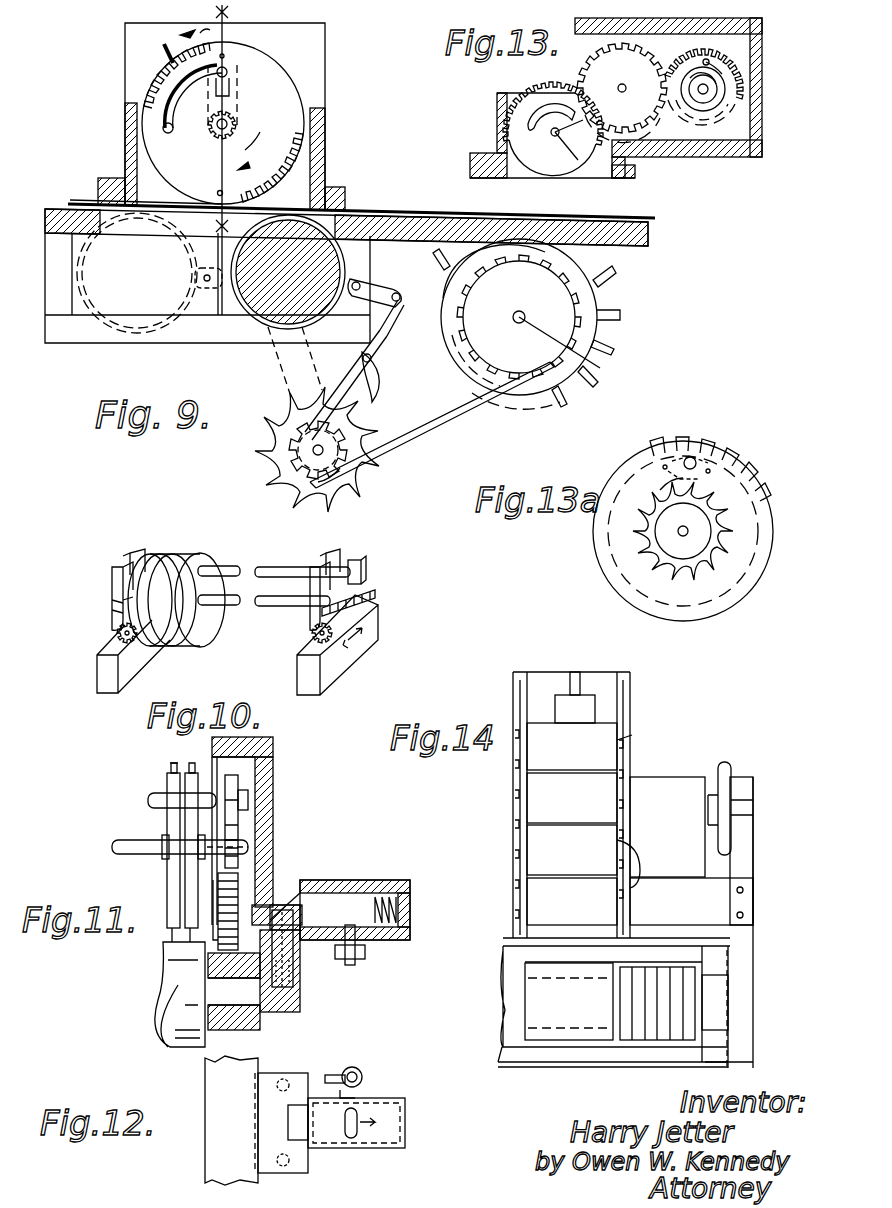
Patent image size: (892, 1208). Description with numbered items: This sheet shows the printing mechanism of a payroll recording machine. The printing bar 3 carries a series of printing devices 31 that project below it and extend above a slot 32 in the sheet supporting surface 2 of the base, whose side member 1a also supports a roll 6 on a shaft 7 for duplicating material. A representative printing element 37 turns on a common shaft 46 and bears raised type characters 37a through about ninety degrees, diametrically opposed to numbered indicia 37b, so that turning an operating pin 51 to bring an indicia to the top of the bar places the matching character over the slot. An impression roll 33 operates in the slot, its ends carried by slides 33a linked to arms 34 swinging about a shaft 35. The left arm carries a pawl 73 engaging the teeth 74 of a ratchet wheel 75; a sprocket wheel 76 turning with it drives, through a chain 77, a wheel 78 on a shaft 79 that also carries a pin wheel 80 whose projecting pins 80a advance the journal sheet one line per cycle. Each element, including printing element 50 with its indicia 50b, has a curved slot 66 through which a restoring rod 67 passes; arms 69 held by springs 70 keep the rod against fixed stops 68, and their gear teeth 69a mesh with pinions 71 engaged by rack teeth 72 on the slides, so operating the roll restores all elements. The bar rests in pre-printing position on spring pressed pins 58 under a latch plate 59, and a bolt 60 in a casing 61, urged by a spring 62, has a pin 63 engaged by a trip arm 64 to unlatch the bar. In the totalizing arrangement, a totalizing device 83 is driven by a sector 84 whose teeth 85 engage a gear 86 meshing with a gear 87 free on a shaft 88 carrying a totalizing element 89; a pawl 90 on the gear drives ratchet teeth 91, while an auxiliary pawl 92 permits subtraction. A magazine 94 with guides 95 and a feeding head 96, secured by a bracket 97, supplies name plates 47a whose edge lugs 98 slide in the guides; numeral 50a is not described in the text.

In FIG. 14, the side member 1a is at (742, 955).
In FIG. 9, the sheet supporting surface 2 is at (72, 207).
In FIG. 9, the printing bar 3 is at (105, 192).
In FIG. 14, the roll 6 is at (715, 770).
In FIG. 14, the shaft 7 is at (745, 790).
In FIG. 9, the printing device 31 is at (208, 178).
In FIG. 9, the slot 32 is at (190, 228).
In FIG. 9, the impression roll 33 is at (280, 310).
In FIG. 11, the impression roll 33 is at (185, 975).
In FIG. 9, the slide 33a is at (220, 322).
In FIG. 10, the slide 33a is at (100, 668).
In FIG. 11, the slide 33a is at (255, 1020).
In FIG. 9, the arm 34 is at (372, 340).
In FIG. 9, the shaft 35 is at (324, 450).
In FIG. 9, the printing element 37 is at (260, 80).
In FIG. 9, the type characters 37a is at (302, 152).
In FIG. 9, the indicia 37b is at (145, 98).
In FIG. 9, the shaft 46 is at (230, 125).
In FIG. 10, the shaft 46 is at (268, 608).
In FIG. 14, the name plates 47a is at (572, 824).
In FIG. 11, the printing element 50 is at (170, 785).
In FIG. 11, the rod lower end 50a is at (168, 935).
In FIG. 11, the indicia 50b is at (172, 765).
In FIG. 9, the pin 51 is at (163, 48).
In FIG. 11, the spring pressed pins 58 is at (292, 960).
In FIG. 12, the spring pressed pins 58 is at (283, 1080).
In FIG. 11, the latch plate 59 is at (272, 906).
In FIG. 12, the latch plate 59 is at (290, 1160).
In FIG. 11, the bolt 60 is at (332, 890).
In FIG. 12, the bolt 60 is at (300, 1135).
In FIG. 11, the casing 61 is at (372, 882).
In FIG. 12, the casing 61 is at (376, 1148).
In FIG. 11, the spring 62 is at (394, 928).
In FIG. 11, the pin 63 is at (360, 965).
In FIG. 12, the pin 63 is at (355, 1120).
In FIG. 12, the trip arm 64 is at (338, 1060).
In FIG. 9, the curved slot 66 is at (163, 128).
In FIG. 10, the curved slot 66 is at (192, 585).
In FIG. 9, the restoring rod 67 is at (226, 70).
In FIG. 10, the restoring rod 67 is at (228, 568).
In FIG. 11, the restoring rod 67 is at (150, 803).
In FIG. 10, the fixed stops 68 is at (366, 572).
In FIG. 11, the fixed stops 68 is at (246, 795).
In FIG. 9, the arm 69 is at (236, 98).
In FIG. 10, the arm 69 is at (112, 582).
In FIG. 11, the arm 69 is at (240, 822).
In FIG. 10, the gear teeth 69a is at (115, 618).
In FIG. 11, the gear teeth 69a is at (241, 862).
In FIG. 10, the spring 70 is at (137, 555).
In FIG. 10, the pinion 71 is at (118, 632).
In FIG. 11, the pinion 71 is at (224, 886).
In FIG. 10, the rack teeth 72 is at (370, 598).
In FIG. 11, the rack teeth 72 is at (226, 932).
In FIG. 9, the pawl 73 is at (376, 385).
In FIG. 9, the teeth 74 is at (372, 422).
In FIG. 9, the ratchet wheel 75 is at (360, 472).
In FIG. 9, the sprocket wheel 76 is at (298, 440).
In FIG. 9, the chain 77 is at (448, 420).
In FIG. 9, the wheel 78 is at (526, 320).
In FIG. 9, the shaft 79 is at (596, 366).
In FIG. 9, the pin wheel 80 is at (590, 298).
In FIG. 9, the projecting pins 80a is at (605, 265).
In FIG. 13, the totalizing device 83 is at (668, 130).
In FIG. 13, the sector 84 is at (548, 160).
In FIG. 13, the teeth 85 is at (580, 162).
In FIG. 13, the gear 86 is at (638, 80).
In FIG. 13, the gear 87 is at (738, 88).
In FIG. 13A, the gear 87 is at (745, 512).
In FIG. 13, the shaft 88 is at (735, 105).
In FIG. 13A, the shaft 88 is at (688, 531).
In FIG. 13, the totalizing element 89 is at (718, 84).
In FIG. 13A, the totalizing element 89 is at (668, 526).
In FIG. 13, the pawl 90 is at (722, 74).
In FIG. 13A, the pawl 90 is at (708, 456).
In FIG. 13A, the ratchet teeth 91 is at (718, 496).
In FIG. 13A, the auxiliary pawl 92 is at (672, 456).
In FIG. 14, the magazine 94 is at (630, 888).
In FIG. 13A, the guides 95 is at (660, 490).
In FIG. 14, the guides 95 is at (625, 806).
In FIG. 14, the feeding head 96 is at (600, 708).
In FIG. 14, the bracket 97 is at (712, 900).
In FIG. 14, the edge lugs 98 is at (632, 735).